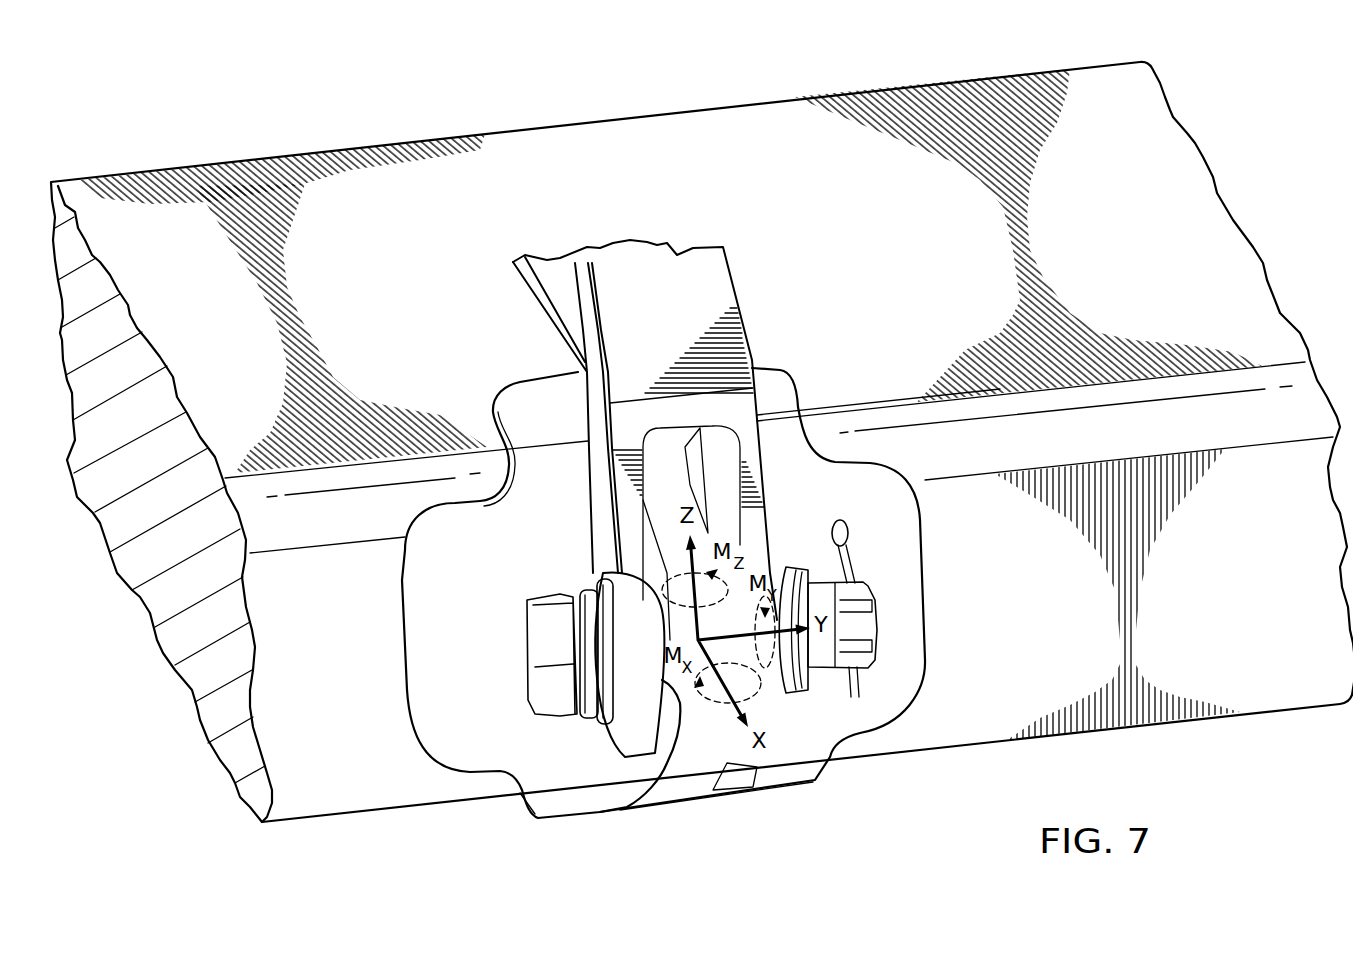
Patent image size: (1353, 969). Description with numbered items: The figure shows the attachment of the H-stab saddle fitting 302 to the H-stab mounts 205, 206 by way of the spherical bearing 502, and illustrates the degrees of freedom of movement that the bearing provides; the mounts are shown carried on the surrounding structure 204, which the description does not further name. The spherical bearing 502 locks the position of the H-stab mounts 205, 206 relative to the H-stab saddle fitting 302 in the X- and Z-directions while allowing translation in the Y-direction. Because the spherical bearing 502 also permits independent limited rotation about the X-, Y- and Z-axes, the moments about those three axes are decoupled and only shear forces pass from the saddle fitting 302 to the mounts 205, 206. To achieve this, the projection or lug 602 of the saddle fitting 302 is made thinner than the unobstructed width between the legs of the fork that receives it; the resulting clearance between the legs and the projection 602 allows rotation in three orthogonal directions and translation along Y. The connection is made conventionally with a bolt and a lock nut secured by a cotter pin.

The composite panel 204 is at (566, 133).
The H-stab mount 205 is at (685, 430).
The H-stab mount 206 is at (737, 295).
The H-stab saddle fitting 302 is at (405, 638).
The spherical bearing 502 is at (667, 700).
The projection (lug) 602 is at (728, 766).